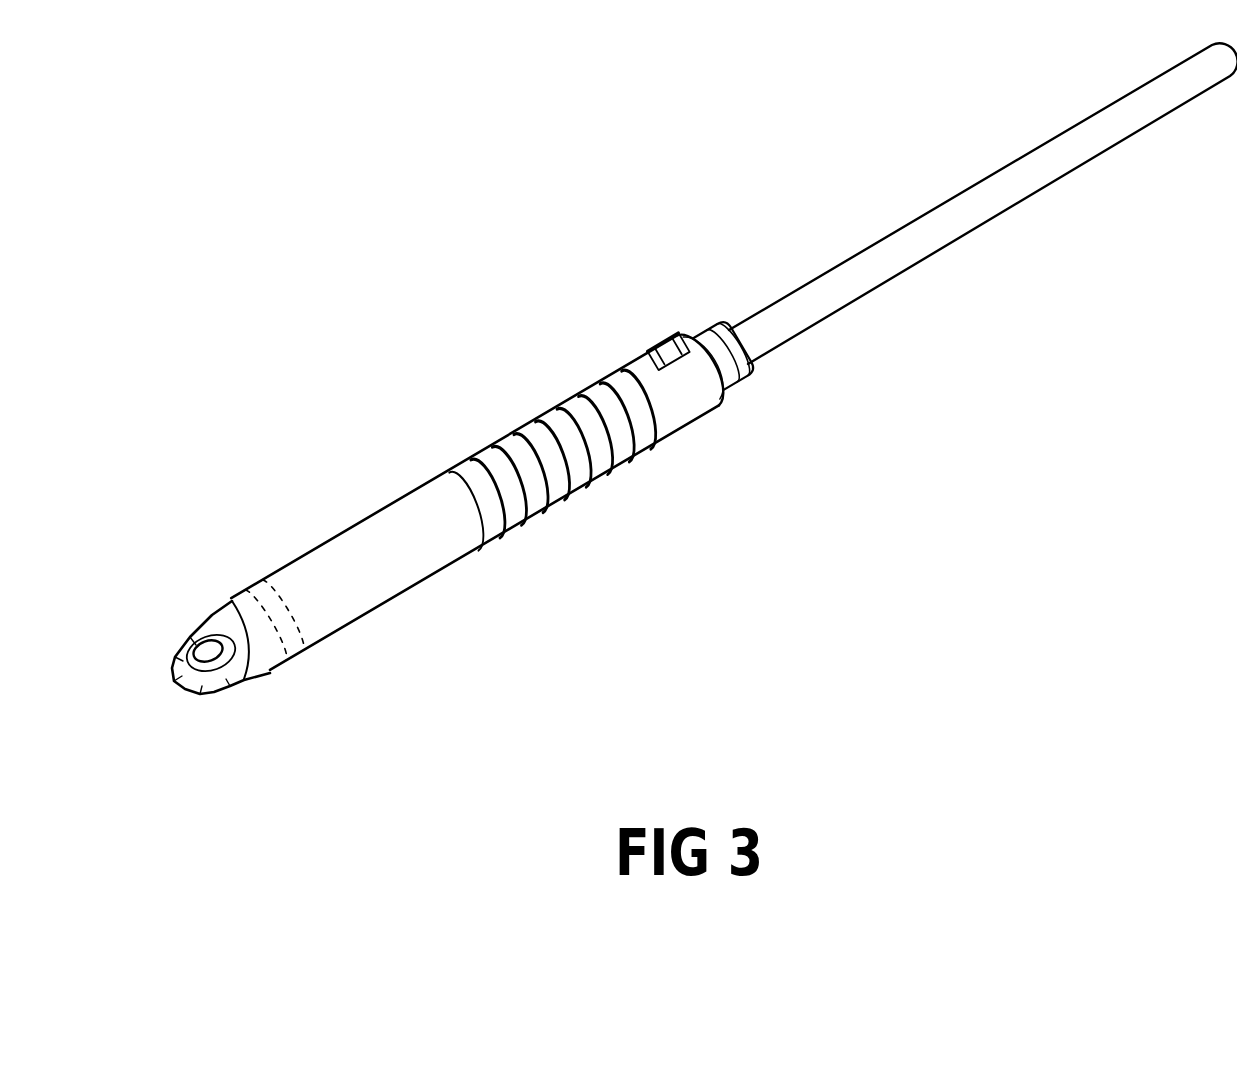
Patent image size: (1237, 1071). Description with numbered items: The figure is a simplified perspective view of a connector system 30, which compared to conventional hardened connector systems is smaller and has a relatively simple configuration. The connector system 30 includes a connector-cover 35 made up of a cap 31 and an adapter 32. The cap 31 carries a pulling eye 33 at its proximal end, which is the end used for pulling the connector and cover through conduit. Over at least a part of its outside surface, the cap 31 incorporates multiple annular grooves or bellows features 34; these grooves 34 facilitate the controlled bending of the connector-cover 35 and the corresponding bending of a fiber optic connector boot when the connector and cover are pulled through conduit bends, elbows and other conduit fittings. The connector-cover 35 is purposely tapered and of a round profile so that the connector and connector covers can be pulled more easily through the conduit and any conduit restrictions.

The connector system 30 is at (983, 393).
The cap 31 is at (368, 560).
The adapter 32 is at (732, 370).
The pulling eye 33 is at (236, 672).
The annular grooves or bellows features 34 is at (543, 520).
The connector-cover 35 is at (623, 293).